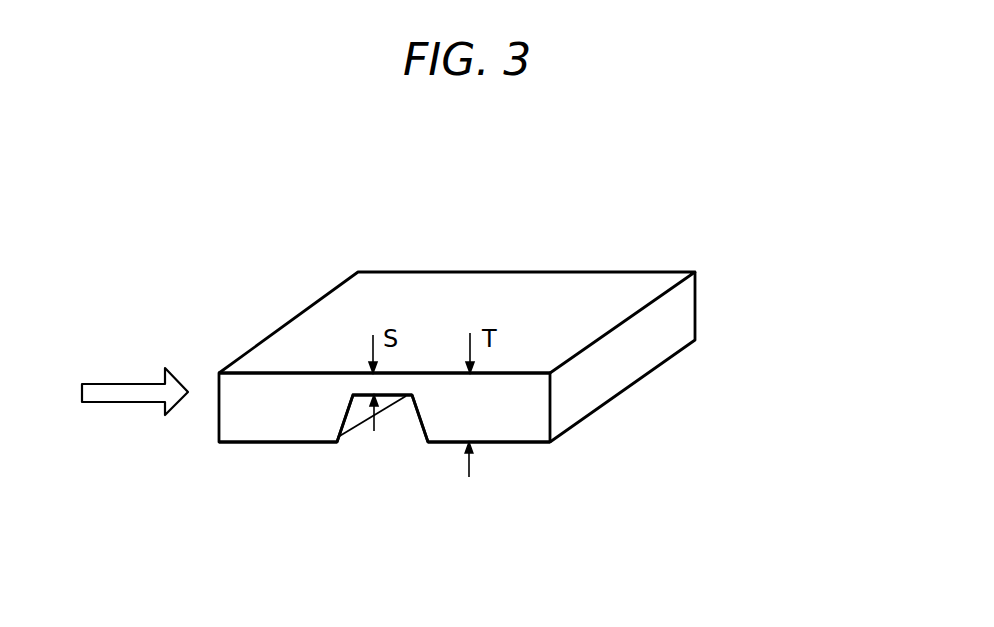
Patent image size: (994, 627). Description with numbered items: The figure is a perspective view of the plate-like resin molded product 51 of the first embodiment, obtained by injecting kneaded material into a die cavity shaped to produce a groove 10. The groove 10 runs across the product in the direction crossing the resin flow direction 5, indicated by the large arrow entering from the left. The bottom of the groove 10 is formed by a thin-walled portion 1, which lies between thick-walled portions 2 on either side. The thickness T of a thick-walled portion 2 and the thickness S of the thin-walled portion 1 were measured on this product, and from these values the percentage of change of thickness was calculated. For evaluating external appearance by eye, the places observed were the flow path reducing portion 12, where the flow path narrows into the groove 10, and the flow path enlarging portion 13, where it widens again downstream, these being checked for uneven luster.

The thin-walled portion 1 is at (393, 385).
The thick-walled portion 2 is at (287, 413).
The resin flow direction 5 is at (125, 395).
The groove 10 is at (425, 428).
The flow path reducing portion 12 is at (330, 408).
The flow path enlarging portion 13 is at (430, 408).
The resin molded product 51 is at (590, 246).